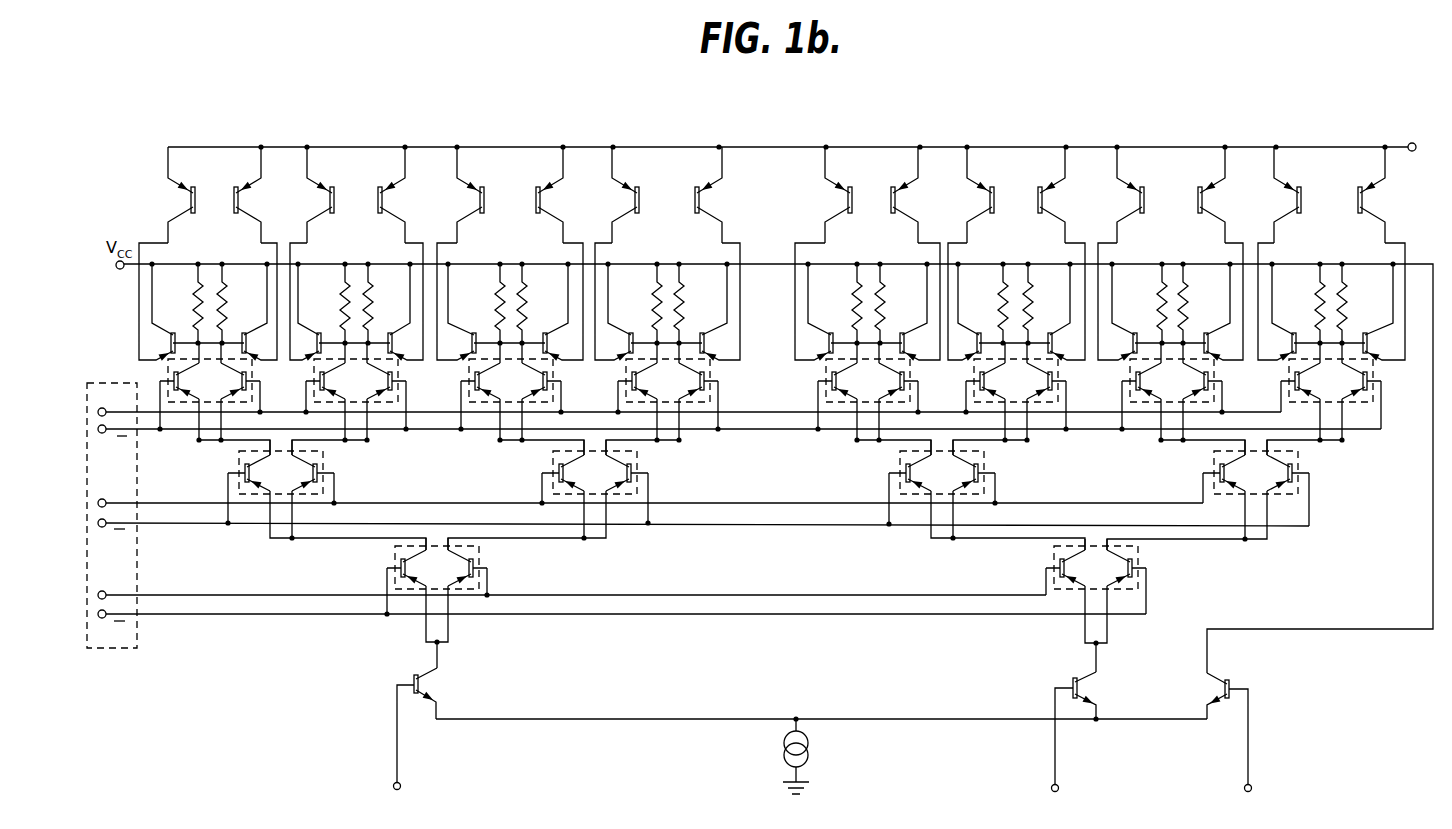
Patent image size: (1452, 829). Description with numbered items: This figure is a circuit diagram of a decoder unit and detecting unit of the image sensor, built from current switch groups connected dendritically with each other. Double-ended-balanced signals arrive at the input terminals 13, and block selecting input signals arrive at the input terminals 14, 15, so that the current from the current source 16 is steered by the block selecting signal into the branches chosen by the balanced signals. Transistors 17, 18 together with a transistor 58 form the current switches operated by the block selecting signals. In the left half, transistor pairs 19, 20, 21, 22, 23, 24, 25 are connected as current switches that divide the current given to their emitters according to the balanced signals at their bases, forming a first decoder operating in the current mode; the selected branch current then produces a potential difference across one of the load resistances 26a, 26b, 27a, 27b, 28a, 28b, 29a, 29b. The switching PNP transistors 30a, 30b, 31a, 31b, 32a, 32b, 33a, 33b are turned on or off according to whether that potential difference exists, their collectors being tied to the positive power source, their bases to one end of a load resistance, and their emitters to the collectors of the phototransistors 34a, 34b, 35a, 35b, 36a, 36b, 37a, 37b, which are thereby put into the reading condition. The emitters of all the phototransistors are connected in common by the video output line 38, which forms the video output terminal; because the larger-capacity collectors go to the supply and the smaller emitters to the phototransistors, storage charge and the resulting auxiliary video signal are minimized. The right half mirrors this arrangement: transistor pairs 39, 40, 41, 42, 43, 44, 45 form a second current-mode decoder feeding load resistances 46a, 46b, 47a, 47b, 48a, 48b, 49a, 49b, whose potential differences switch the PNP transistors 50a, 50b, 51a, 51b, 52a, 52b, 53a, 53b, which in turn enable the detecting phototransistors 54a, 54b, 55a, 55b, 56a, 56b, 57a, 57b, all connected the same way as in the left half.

The input terminals 13 is at (140, 650).
The input terminal 14 is at (396, 758).
The input terminal 15 is at (1055, 757).
The current source 16 is at (785, 746).
The transistor 17 is at (426, 674).
The transistor 18 is at (1087, 674).
The transistor pair 19 is at (395, 550).
The transistor pair 20 is at (236, 455).
The transistor pair 21 is at (552, 466).
The transistor pair 22 is at (178, 404).
The transistor pair 23 is at (376, 404).
The transistor pair 24 is at (485, 406).
The transistor pair 25 is at (704, 404).
The load resistance 26a is at (194, 302).
The load resistance 26b is at (226, 302).
The load resistance 27a is at (341, 302).
The load resistance 27b is at (372, 302).
The load resistance 28a is at (497, 302).
The load resistance 28b is at (526, 302).
The load resistance 29a is at (654, 302).
The load resistance 29b is at (683, 302).
The switching PNP transistor 30a is at (160, 350).
The switching PNP transistor 30b is at (260, 356).
The switching PNP transistor 31a is at (304, 362).
The switching PNP transistor 31b is at (403, 356).
The switching PNP transistor 32a is at (455, 362).
The switching PNP transistor 32b is at (560, 356).
The switching PNP transistor 33a is at (612, 362).
The switching PNP transistor 33b is at (722, 352).
The phototransistor 34a is at (187, 196).
The phototransistor 34b is at (240, 201).
The phototransistor 35a is at (335, 207).
The phototransistor 35b is at (383, 200).
The phototransistor 36a is at (484, 194).
The phototransistor 36b is at (535, 207).
The phototransistor 37a is at (633, 196).
The phototransistor 37b is at (703, 198).
The video output line 38 is at (1153, 147).
The transistor pair 39 is at (1137, 557).
The transistor pair 40 is at (898, 457).
The transistor pair 41 is at (1213, 456).
The transistor pair 42 is at (841, 404).
The transistor pair 43 is at (1052, 404).
The transistor pair 44 is at (1150, 404).
The transistor pair 45 is at (1377, 403).
The load resistance 46a is at (854, 302).
The load resistance 46b is at (884, 302).
The load resistance 47a is at (1000, 302).
The load resistance 47b is at (1032, 302).
The load resistance 48a is at (1159, 302).
The load resistance 48b is at (1187, 302).
The load resistance 49a is at (1317, 302).
The load resistance 49b is at (1346, 302).
The switching PNP transistor 50a is at (813, 360).
The switching PNP transistor 50b is at (913, 356).
The switching PNP transistor 51a is at (965, 362).
The switching PNP transistor 51b is at (1063, 356).
The switching PNP transistor 52a is at (1113, 362).
The switching PNP transistor 52b is at (1268, 352).
The switching PNP transistor 53a is at (1275, 362).
The switching PNP transistor 53b is at (1382, 352).
The detecting phototransistor 54a is at (848, 203).
The detecting phototransistor 54b is at (897, 199).
The detecting phototransistor 55a is at (995, 203).
The detecting phototransistor 55b is at (1045, 199).
The detecting phototransistor 56a is at (1146, 203).
The detecting phototransistor 56b is at (1205, 200).
The detecting phototransistor 57a is at (1304, 198).
The detecting phototransistor 57b is at (1366, 199).
The transistor 58 is at (1208, 682).